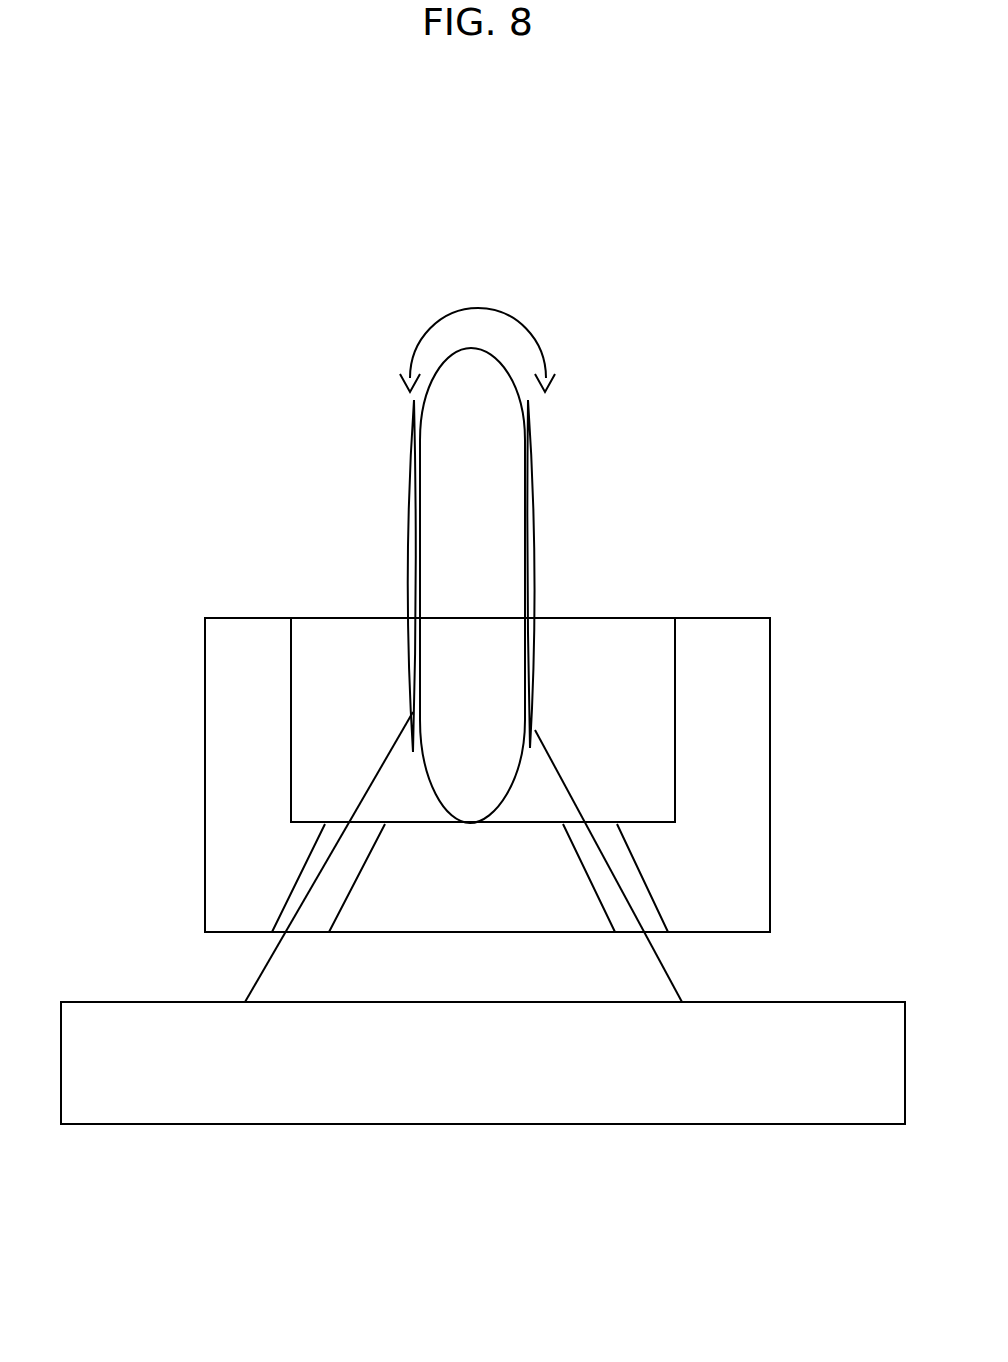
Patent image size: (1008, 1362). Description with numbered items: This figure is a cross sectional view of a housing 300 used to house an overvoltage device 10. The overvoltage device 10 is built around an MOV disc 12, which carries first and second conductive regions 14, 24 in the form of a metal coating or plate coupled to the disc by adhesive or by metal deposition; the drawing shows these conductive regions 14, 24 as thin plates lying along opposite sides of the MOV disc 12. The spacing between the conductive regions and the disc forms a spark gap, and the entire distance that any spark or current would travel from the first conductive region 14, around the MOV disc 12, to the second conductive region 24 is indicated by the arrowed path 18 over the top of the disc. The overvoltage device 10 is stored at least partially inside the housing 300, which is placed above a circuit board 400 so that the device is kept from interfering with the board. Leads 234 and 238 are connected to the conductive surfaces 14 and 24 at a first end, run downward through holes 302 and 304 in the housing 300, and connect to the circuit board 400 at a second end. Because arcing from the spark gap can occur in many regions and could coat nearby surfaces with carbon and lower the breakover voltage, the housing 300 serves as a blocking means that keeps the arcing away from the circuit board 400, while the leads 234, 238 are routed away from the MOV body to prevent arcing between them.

The overvoltage device 10 is at (635, 317).
The MOV disc 12 is at (479, 387).
The conductive region 14 is at (537, 458).
The spark travel distance 18 is at (430, 325).
The conductive region 24 is at (408, 477).
The lead 234 is at (670, 972).
The lead 238 is at (263, 970).
The housing 300 is at (708, 617).
The hole 302 is at (643, 877).
The hole 304 is at (305, 862).
The circuit board 400 is at (393, 1083).